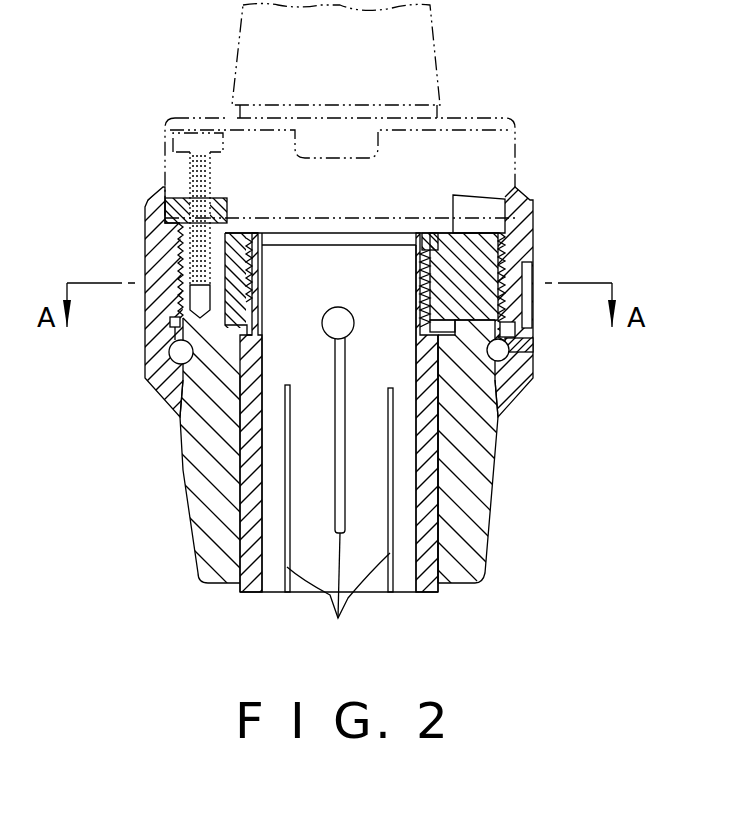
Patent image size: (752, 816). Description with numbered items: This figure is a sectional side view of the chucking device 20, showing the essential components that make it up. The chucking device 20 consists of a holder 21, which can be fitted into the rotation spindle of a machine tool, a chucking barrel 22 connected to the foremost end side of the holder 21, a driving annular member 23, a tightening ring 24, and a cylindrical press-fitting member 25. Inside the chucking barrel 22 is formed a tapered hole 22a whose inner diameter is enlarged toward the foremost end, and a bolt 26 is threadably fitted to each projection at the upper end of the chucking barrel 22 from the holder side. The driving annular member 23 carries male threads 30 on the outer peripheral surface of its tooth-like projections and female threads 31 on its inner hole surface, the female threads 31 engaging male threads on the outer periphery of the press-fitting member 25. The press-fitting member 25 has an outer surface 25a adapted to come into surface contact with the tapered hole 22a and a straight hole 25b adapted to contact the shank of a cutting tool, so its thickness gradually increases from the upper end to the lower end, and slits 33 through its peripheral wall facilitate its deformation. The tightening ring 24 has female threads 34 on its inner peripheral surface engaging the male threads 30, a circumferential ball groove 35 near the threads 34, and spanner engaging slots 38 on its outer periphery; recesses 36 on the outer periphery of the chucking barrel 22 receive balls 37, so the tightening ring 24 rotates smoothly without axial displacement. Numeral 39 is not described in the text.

The chucking device 20 is at (176, 98).
The holder 21 is at (428, 81).
The chucking barrel 22 is at (468, 470).
The tapered hole 22a is at (440, 522).
The driving annular member 23 is at (480, 262).
The tightening ring 24 is at (535, 230).
The press-fitting member 25 is at (248, 523).
The outer surface 25a is at (245, 490).
The straight hole 25b is at (263, 337).
The bolt 26 is at (193, 212).
The male threads 30 is at (508, 288).
The female threads 31 is at (430, 290).
The slits 33 is at (339, 482).
The female threads 34 is at (477, 230).
The ball groove 35 is at (505, 362).
The recesses 36 is at (500, 345).
The balls 37 is at (530, 353).
The spanner engaging slot 38 is at (527, 303).
The locking nub 39 is at (425, 231).